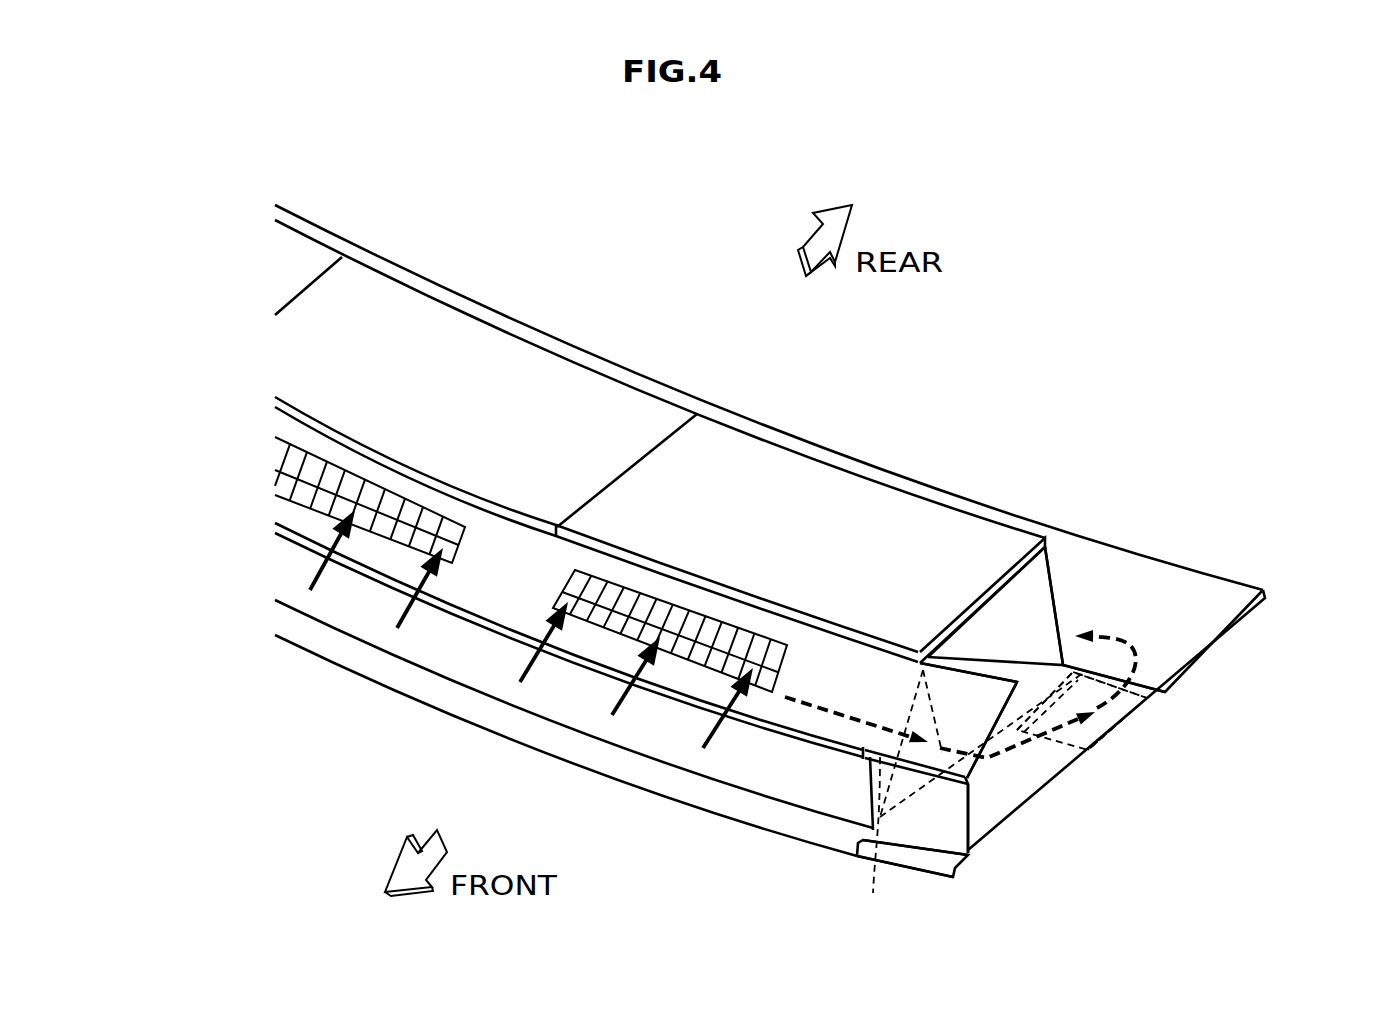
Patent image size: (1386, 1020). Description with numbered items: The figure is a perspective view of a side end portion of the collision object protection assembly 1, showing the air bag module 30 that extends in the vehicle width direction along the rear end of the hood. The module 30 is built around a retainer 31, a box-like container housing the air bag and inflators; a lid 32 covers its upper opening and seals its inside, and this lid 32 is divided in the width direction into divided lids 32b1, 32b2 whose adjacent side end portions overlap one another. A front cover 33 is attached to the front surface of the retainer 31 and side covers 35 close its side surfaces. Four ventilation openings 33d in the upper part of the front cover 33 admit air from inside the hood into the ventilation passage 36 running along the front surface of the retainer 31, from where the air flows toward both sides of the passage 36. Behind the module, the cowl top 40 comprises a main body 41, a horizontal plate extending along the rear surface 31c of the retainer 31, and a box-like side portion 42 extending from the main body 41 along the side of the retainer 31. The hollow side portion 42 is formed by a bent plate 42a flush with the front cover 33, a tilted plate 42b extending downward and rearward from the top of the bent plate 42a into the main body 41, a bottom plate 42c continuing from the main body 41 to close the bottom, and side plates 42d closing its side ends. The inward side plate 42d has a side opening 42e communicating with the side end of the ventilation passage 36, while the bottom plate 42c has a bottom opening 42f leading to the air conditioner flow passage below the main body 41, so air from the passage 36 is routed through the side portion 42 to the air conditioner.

The vehicle rear body structure 1 is at (427, 227).
The air bag module 30 is at (825, 445).
The retainer 31 is at (1055, 592).
The rear surface 31c is at (1060, 618).
The lid 32 is at (596, 459).
The divided lid 32b1 is at (543, 367).
The divided lid 32b2 is at (710, 437).
The front cover 33 is at (470, 662).
The ventilation openings 33d is at (383, 540).
The side cover 35 is at (980, 630).
The ventilation passage 36 is at (880, 768).
The cowl top 40 is at (1247, 618).
The main body 41 is at (1188, 643).
The side portion 42 is at (1030, 797).
The bent plate 42a is at (940, 820).
The tilted plate 42b is at (1030, 673).
The bottom plate 42c is at (1028, 768).
The side plates 42d is at (950, 697).
The side opening 42e is at (877, 842).
The bottom opening 42f is at (1123, 728).